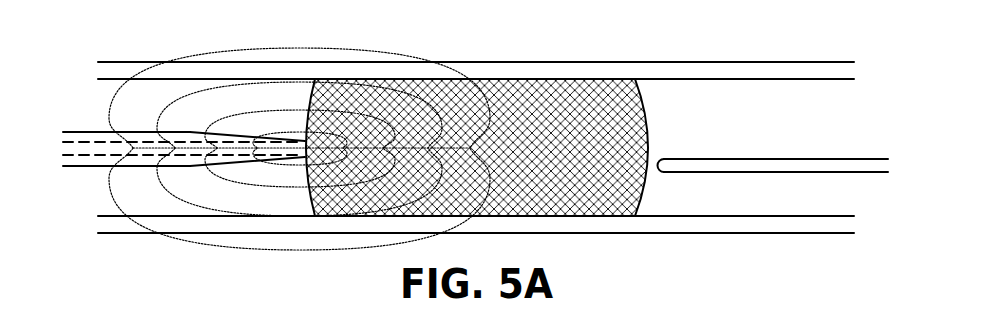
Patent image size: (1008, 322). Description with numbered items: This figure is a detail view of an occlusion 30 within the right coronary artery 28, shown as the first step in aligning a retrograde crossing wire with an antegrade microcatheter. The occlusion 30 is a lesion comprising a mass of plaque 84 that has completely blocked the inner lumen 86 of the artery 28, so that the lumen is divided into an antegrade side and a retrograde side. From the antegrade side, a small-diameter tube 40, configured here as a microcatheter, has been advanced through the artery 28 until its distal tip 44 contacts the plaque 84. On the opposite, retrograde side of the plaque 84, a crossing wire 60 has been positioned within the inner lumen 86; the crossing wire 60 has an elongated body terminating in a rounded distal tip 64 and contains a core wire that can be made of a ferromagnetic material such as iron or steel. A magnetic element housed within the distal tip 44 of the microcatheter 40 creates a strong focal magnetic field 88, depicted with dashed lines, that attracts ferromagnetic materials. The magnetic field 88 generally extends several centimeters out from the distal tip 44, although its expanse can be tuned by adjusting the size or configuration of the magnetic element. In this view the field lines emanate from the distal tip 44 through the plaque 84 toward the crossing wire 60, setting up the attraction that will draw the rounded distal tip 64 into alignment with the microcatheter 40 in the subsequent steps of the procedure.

The right coronary artery 28 is at (664, 62).
The occlusion 30 is at (476, 119).
The small-diameter tube 40 is at (169, 142).
The distal tip 44 is at (252, 181).
The crossing wire 60 is at (777, 131).
The rounded distal tip 64 is at (668, 142).
The plaque 84 is at (608, 121).
The inner lumen 86 is at (769, 206).
The magnetic field 88 is at (377, 42).